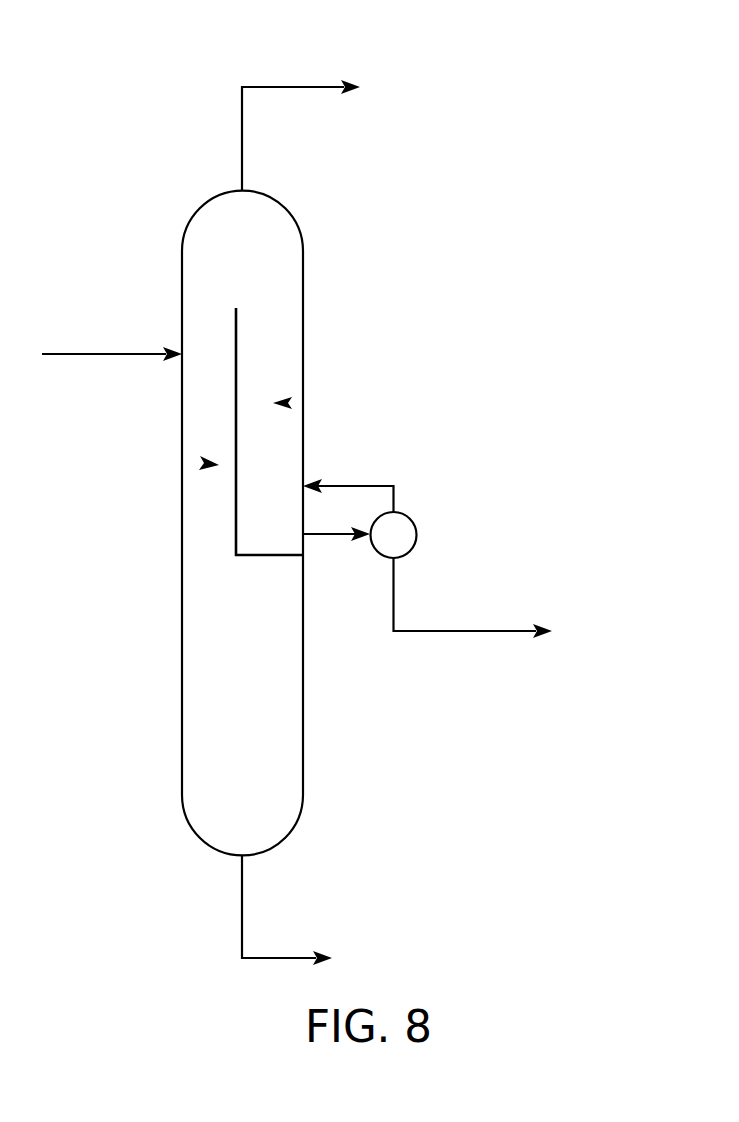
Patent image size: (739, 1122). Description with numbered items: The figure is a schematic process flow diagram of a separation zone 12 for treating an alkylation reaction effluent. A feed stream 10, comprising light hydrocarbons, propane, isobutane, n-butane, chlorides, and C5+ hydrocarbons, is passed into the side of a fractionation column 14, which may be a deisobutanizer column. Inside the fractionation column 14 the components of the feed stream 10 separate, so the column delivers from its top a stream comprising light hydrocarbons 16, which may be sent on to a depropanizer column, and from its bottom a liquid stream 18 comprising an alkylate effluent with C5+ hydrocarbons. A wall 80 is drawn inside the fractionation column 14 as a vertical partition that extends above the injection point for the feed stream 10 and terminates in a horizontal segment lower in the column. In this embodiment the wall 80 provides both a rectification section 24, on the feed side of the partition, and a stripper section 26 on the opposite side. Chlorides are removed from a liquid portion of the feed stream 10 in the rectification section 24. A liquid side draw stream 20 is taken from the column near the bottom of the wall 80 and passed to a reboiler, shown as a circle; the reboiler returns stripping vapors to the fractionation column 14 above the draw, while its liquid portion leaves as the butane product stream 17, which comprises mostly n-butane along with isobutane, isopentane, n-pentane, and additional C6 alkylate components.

The feed stream 10 is at (113, 352).
The separation zone 12 is at (532, 148).
The fractionation column 14 is at (295, 215).
The stream comprising light hydrocarbons 16 is at (303, 86).
The butane product stream 17 is at (461, 631).
The liquid stream 18 is at (241, 905).
The liquid side draw stream 20 is at (333, 538).
The rectification section 24 is at (204, 463).
The stripper section 26 is at (288, 402).
The wall 80 is at (238, 327).